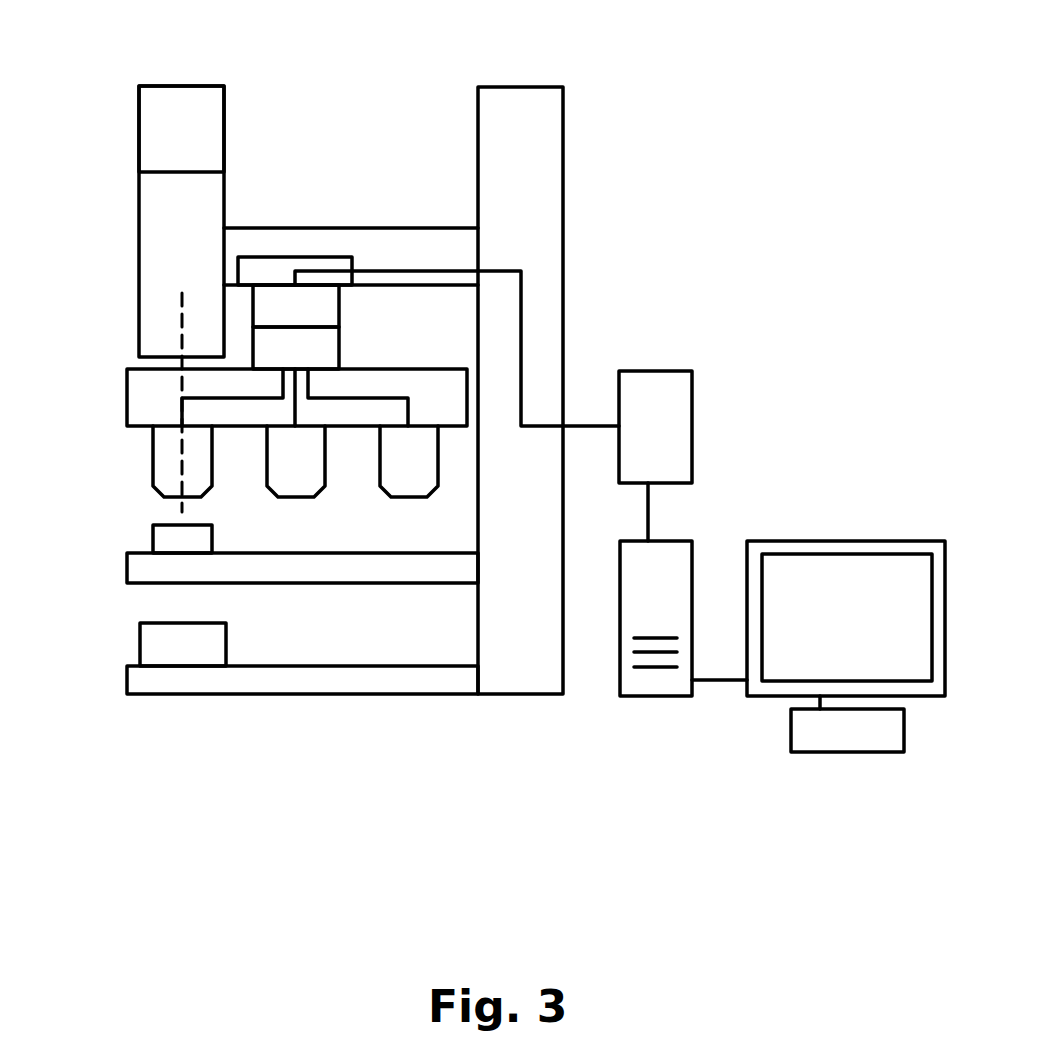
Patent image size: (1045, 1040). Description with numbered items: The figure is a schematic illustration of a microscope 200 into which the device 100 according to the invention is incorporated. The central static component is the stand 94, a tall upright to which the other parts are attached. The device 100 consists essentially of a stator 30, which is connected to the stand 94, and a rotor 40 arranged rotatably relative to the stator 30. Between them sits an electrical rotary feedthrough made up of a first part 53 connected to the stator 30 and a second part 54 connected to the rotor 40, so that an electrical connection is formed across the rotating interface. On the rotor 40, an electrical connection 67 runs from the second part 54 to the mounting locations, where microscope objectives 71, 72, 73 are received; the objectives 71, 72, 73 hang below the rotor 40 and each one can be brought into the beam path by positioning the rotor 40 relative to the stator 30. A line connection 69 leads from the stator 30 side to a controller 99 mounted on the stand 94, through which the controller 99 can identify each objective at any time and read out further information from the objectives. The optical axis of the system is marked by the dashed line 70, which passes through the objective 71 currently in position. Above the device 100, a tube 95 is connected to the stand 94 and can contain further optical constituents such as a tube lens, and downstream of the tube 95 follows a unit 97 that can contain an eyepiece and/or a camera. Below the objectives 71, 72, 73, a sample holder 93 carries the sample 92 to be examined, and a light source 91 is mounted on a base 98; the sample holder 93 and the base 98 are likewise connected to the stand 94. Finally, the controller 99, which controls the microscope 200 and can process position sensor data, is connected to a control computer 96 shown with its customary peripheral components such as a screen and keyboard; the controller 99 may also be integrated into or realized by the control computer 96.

The microscope 200 is at (757, 117).
The device 100 is at (385, 160).
The stator 30 is at (277, 272).
The rotor 40 is at (145, 404).
The first part 53 is at (315, 309).
The second part 54 is at (313, 351).
The electrical connection 67 is at (412, 401).
The line connection 69 is at (521, 318).
The optical axis 70 is at (172, 314).
The microscope objective 71 is at (165, 458).
The microscope objective 72 is at (297, 472).
The microscope objective 73 is at (414, 470).
The light source 91 is at (190, 643).
The sample 92 is at (178, 537).
The sample holder 93 is at (297, 567).
The stand 94 is at (537, 162).
The tube 95 is at (160, 212).
The control computer 96 is at (700, 771).
The unit 97 is at (183, 110).
The base 98 is at (350, 680).
The controller 99 is at (675, 437).